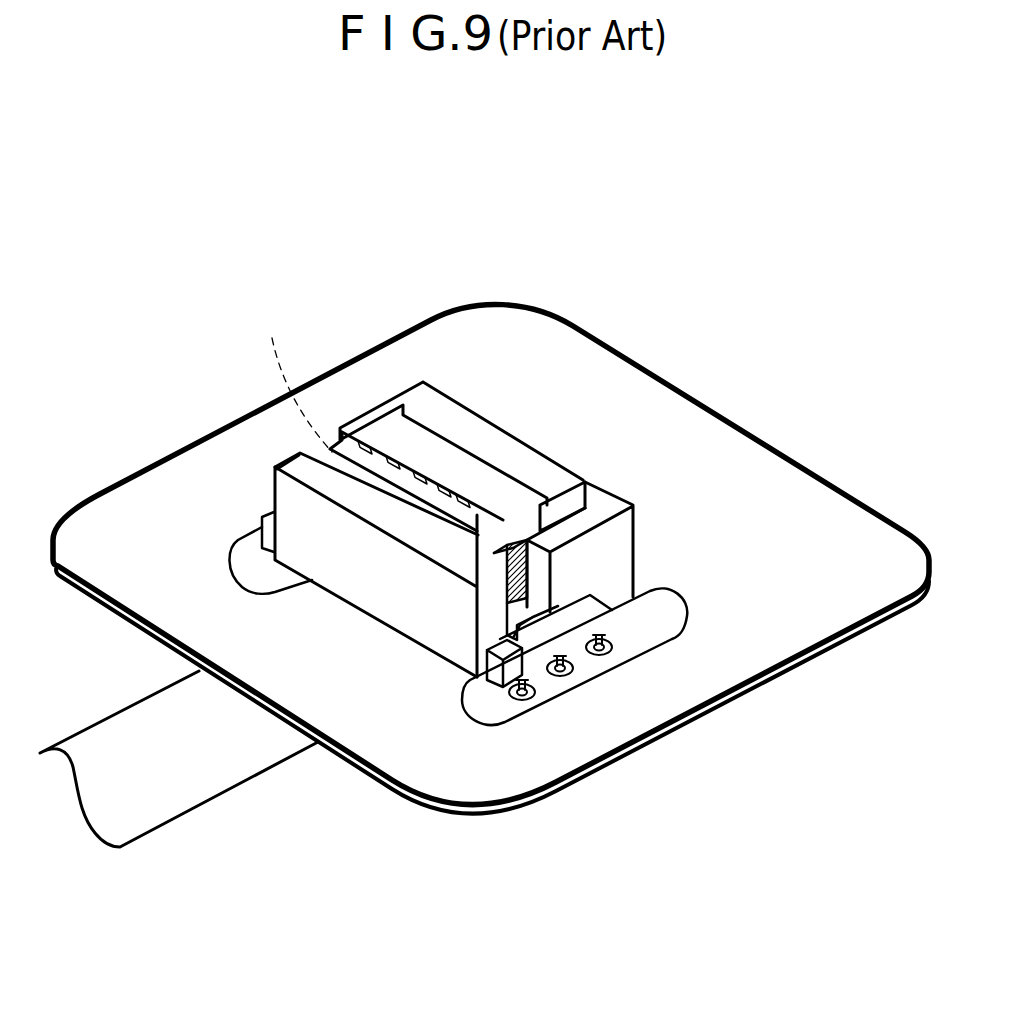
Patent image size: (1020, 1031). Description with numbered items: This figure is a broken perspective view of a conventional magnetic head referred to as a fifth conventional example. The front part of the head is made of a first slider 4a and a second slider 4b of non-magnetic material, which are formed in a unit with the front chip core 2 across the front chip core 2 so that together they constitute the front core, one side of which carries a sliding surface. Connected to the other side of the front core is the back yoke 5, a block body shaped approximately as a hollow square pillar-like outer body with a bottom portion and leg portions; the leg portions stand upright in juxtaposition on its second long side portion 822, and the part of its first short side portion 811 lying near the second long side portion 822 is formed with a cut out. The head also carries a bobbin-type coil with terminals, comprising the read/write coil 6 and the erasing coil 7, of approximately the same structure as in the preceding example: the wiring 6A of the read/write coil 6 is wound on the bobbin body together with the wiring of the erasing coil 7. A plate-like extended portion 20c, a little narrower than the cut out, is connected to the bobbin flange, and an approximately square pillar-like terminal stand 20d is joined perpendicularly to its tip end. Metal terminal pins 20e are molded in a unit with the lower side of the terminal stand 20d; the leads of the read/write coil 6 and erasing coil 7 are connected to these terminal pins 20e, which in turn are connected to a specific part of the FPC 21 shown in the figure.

The front chip core 2 is at (375, 442).
The first slider 4a is at (432, 395).
The second slider 4b is at (453, 510).
The back yoke 5 is at (386, 639).
The read/write coil 6 is at (507, 628).
The wiring of the read/write coil 6A is at (518, 545).
The erasing coil 7 is at (295, 373).
The second long side portion 822 is at (297, 507).
The first short side portion 811 is at (620, 553).
The extended portion 20c is at (550, 612).
The terminal stand 20d is at (603, 622).
The terminal pins 20e is at (603, 652).
The FPC 21 is at (167, 798).